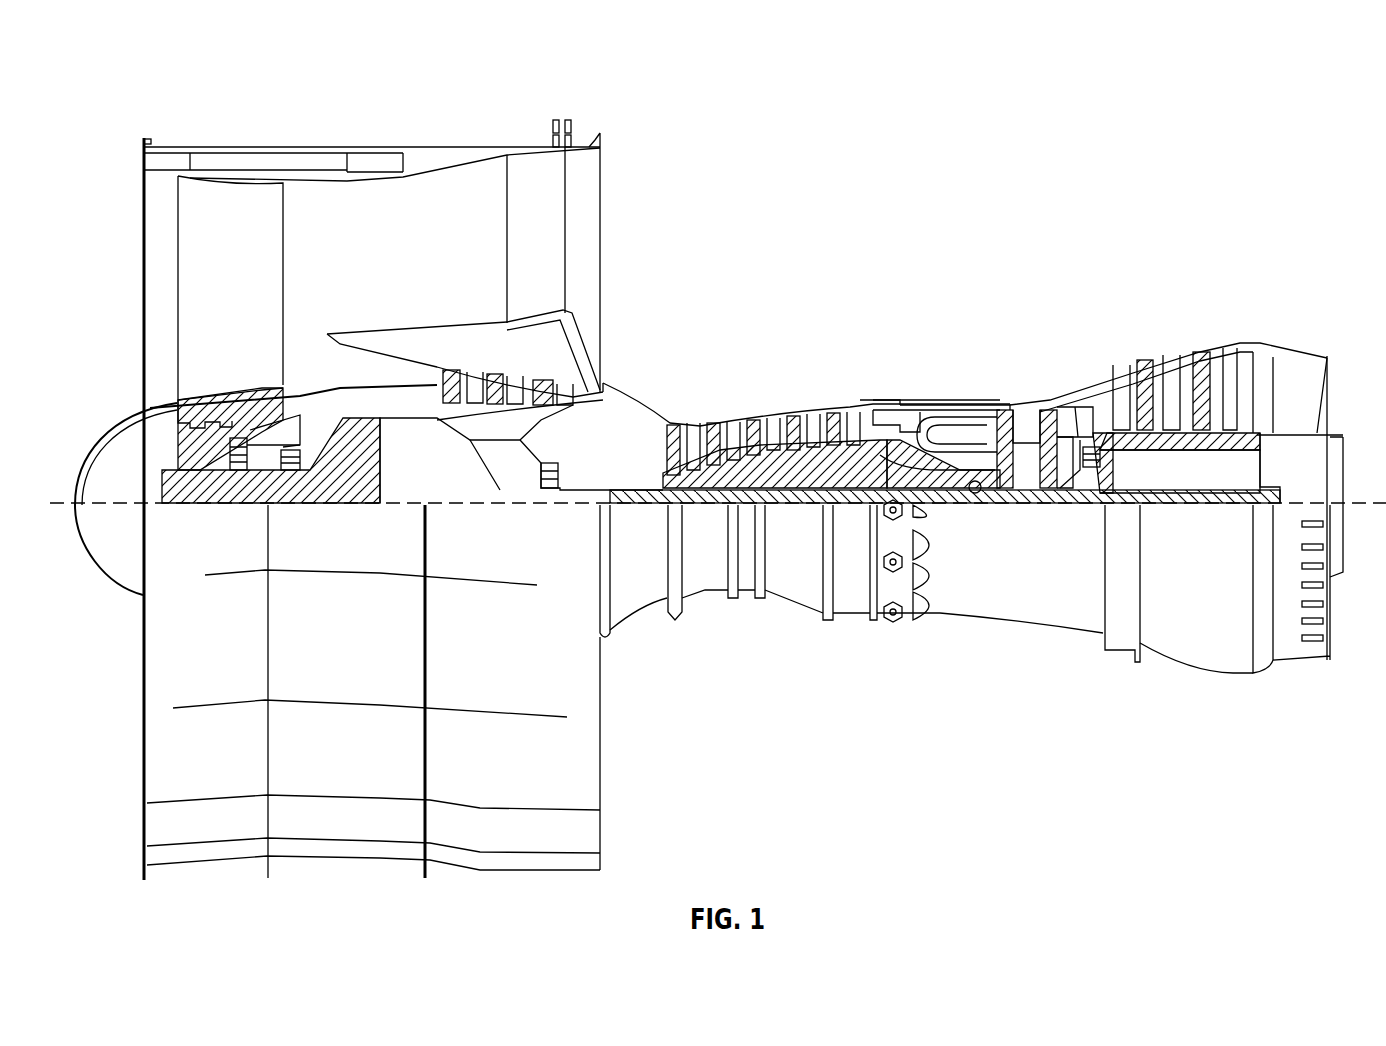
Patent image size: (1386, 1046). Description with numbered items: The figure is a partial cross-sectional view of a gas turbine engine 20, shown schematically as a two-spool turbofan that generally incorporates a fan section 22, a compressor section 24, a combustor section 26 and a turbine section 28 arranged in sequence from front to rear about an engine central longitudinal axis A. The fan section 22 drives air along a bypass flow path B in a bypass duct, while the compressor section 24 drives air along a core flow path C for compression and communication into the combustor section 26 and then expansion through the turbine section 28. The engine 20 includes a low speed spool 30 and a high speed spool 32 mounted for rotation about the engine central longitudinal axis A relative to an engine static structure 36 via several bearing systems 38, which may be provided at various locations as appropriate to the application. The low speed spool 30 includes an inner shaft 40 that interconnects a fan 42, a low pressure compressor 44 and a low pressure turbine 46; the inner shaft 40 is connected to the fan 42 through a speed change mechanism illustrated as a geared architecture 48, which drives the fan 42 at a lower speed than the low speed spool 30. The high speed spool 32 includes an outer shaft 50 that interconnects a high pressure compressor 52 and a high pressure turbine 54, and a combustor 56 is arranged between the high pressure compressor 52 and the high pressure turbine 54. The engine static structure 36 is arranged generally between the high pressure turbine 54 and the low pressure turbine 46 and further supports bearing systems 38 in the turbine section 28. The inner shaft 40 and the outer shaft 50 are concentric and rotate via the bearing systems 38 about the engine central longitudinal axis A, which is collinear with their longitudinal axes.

The gas turbine engine 20 is at (1160, 182).
The fan section 22 is at (246, 138).
The compressor section 24 is at (790, 358).
The combustor section 26 is at (980, 338).
The turbine section 28 is at (1090, 346).
The low speed spool 30 is at (816, 510).
The high speed spool 32 is at (862, 456).
The engine static structure 36 is at (853, 624).
The bearing systems 38 is at (242, 465).
The inner shaft 40 is at (614, 500).
The fan 42 is at (256, 272).
The low pressure compressor 44 is at (520, 384).
The low pressure turbine 46 is at (1190, 368).
The geared architecture 48 is at (375, 472).
The outer shaft 50 is at (977, 482).
The high pressure compressor 52 is at (777, 473).
The high pressure turbine 54 is at (1028, 399).
The combustor 56 is at (967, 423).
The engine central longitudinal axis A is at (1353, 500).
The bypass flow path B is at (445, 241).
The core flow path C is at (328, 367).